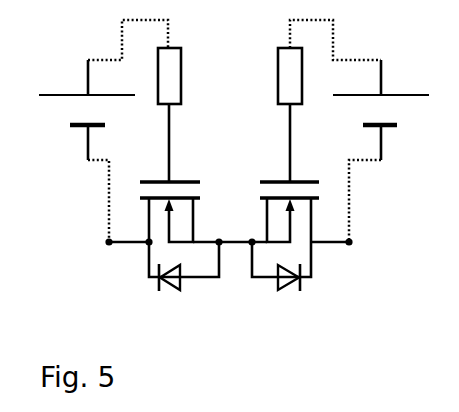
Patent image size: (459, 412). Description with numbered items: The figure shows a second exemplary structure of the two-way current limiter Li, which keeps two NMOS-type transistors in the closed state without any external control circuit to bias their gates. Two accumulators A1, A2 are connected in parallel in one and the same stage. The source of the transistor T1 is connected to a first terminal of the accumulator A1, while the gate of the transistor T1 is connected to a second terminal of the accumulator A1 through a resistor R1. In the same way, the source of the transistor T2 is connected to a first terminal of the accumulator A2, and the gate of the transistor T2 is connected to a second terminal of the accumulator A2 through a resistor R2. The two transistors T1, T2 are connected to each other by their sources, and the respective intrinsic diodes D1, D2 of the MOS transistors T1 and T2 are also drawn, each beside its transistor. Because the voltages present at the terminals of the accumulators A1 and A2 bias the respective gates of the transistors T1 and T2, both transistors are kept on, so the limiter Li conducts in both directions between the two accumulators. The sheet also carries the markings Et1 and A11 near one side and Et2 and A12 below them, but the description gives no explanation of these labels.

The resistor R1 is at (181, 77).
The resistor R2 is at (278, 77).
The accumulator A1 is at (72, 135).
The accumulator A2 is at (392, 113).
The transistor T1 is at (126, 220).
The transistor T2 is at (323, 222).
The intrinsic diode D1 is at (170, 297).
The intrinsic diode D2 is at (287, 297).
The limiter Li is at (234, 319).
The first stage Et1 is at (412, 293).
The second stage Et2 is at (412, 364).
The first electrode part A11 is at (448, 289).
The second electrode part A12 is at (448, 360).